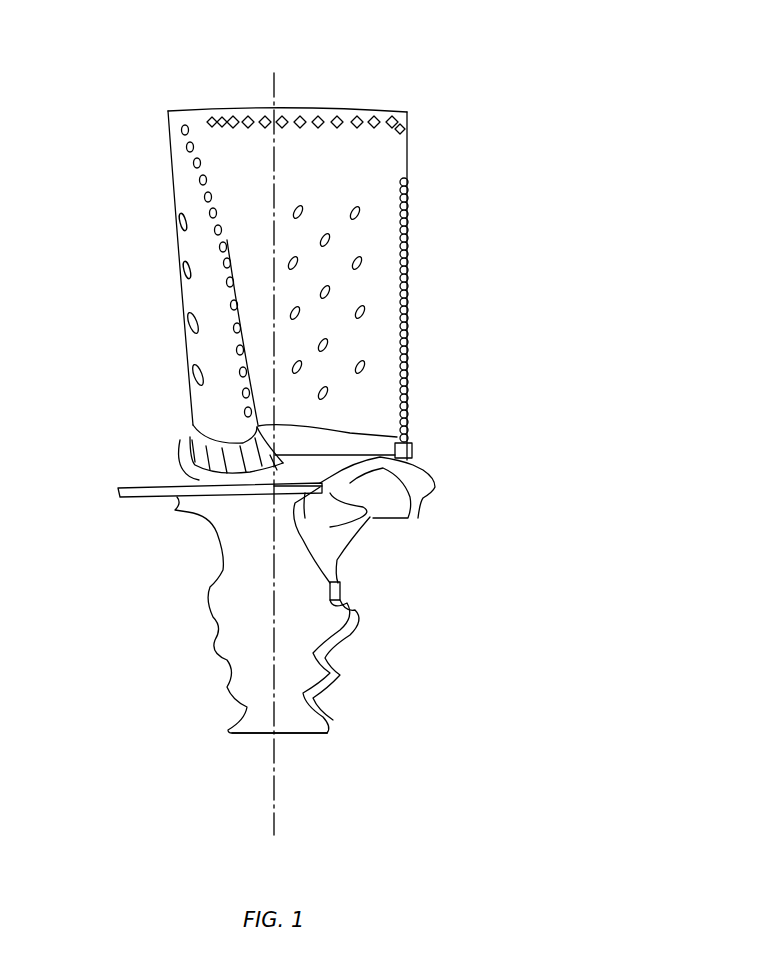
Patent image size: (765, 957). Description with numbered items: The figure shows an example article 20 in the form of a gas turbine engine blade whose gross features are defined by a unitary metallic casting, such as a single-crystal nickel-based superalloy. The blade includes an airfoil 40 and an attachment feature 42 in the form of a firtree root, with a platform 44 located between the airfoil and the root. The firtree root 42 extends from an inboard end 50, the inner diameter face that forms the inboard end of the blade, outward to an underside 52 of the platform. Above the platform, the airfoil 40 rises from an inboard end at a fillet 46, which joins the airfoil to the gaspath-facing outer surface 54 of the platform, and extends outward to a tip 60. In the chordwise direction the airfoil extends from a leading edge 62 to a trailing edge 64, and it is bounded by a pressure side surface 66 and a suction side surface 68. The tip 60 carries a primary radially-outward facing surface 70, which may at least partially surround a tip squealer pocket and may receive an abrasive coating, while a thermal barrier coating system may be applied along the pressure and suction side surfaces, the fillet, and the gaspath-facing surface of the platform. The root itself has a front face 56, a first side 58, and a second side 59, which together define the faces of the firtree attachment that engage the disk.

The article 20 is at (462, 122).
The airfoil 40 is at (169, 257).
The attachment feature 42 is at (351, 687).
The platform 44 is at (157, 476).
The fillet 46 is at (343, 447).
The inboard end 50 is at (310, 734).
The underside of the platform 52 is at (392, 493).
The outer surface of the platform 54 is at (183, 462).
The front face 56 is at (307, 603).
The first side 58 is at (337, 655).
The second side 59 is at (220, 640).
The tip 60 is at (300, 109).
The leading edge 62 is at (233, 287).
The trailing edge 64 is at (405, 292).
The pressure side surface 66 is at (343, 223).
The suction side surface 68 is at (182, 212).
The primary radially-outward facing surface 70 is at (319, 108).